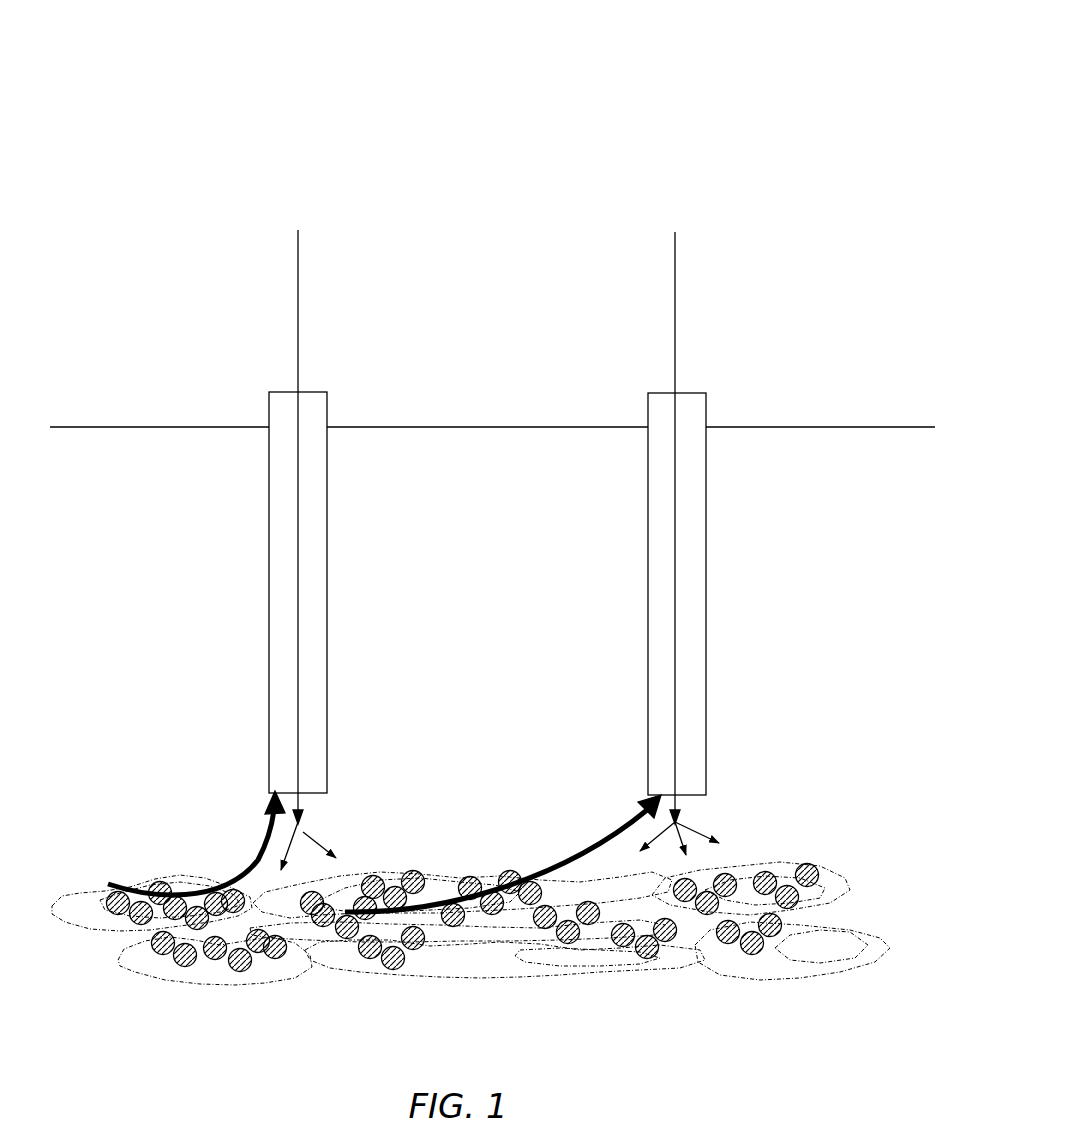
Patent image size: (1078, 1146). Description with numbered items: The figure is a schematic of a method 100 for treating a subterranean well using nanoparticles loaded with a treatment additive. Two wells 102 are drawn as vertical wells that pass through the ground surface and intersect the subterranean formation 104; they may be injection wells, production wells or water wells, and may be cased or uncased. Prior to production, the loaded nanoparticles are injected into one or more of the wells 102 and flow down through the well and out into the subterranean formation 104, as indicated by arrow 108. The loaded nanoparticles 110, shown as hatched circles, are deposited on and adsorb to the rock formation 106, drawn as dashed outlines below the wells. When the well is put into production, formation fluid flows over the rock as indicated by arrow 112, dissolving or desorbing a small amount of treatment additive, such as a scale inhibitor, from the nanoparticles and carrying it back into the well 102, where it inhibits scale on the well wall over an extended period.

The method 100 is at (176, 92).
The wells 102 is at (269, 427).
The subterranean formation 104 is at (127, 514).
The rock formation 106 is at (165, 968).
The arrow 108 is at (298, 332).
The loaded nanoparticles 110 is at (373, 950).
The arrow 112 is at (262, 848).